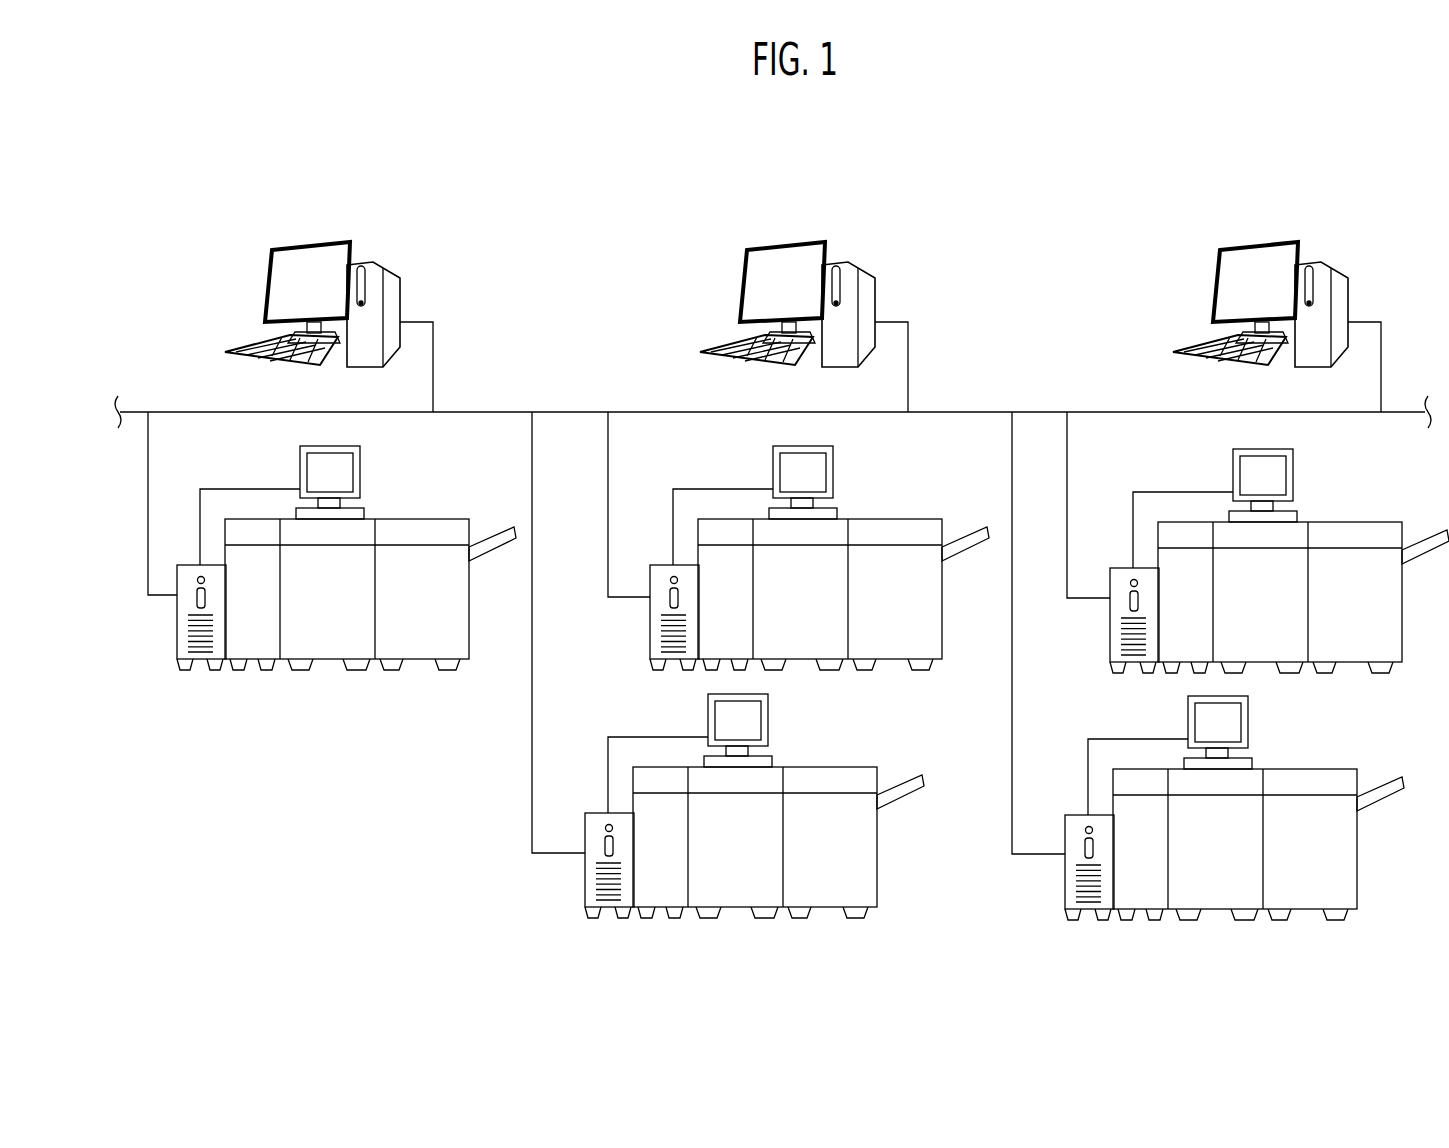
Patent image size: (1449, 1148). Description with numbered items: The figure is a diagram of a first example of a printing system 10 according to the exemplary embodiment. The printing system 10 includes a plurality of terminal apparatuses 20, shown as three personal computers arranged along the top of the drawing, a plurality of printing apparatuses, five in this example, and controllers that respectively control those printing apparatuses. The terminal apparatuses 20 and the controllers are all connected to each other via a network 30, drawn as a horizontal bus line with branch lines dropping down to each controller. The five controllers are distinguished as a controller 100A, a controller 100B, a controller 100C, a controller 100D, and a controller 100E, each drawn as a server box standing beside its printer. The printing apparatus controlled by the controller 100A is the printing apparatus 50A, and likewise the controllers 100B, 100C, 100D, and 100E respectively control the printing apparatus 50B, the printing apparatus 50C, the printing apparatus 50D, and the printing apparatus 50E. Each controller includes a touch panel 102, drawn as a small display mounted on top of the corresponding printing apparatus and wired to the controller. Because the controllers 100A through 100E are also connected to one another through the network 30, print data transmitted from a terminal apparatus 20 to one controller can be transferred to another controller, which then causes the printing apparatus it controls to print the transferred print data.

The printing system 10 is at (1104, 179).
The terminal apparatus 20 is at (392, 263).
The network 30 is at (135, 410).
The printing apparatus 50A is at (470, 638).
The printing apparatus 50B is at (878, 887).
The printing apparatus 50C is at (943, 638).
The printing apparatus 50D is at (1403, 640).
The printing apparatus 50E is at (1358, 888).
The controller 100A is at (177, 637).
The controller 100B is at (585, 886).
The controller 100C is at (648, 637).
The controller 100D is at (1107, 640).
The controller 100E is at (1063, 888).
The touch panel 102 is at (360, 475).